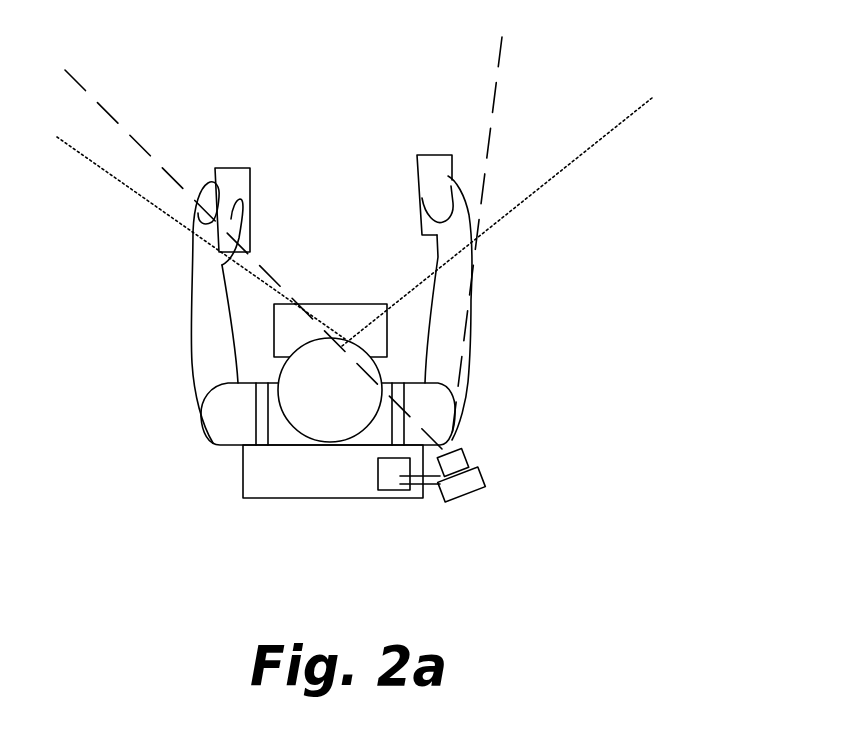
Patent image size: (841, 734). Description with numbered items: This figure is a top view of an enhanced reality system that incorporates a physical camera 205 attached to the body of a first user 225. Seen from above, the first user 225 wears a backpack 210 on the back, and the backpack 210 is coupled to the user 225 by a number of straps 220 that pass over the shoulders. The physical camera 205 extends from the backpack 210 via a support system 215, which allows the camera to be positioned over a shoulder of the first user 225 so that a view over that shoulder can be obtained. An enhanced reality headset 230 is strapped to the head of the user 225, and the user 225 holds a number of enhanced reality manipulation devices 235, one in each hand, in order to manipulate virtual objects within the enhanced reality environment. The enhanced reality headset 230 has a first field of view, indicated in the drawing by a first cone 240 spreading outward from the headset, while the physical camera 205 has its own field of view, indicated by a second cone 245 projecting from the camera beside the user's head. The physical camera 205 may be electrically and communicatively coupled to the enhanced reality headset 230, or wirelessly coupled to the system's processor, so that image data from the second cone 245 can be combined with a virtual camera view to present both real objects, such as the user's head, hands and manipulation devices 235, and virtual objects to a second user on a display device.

The physical camera 205 is at (468, 523).
The backpack 210 is at (272, 522).
The support system 215 is at (429, 518).
The straps 220 is at (262, 426).
The first user 225 is at (213, 323).
The enhanced reality headset 230 is at (345, 288).
The enhanced reality manipulation devices 235 is at (231, 141).
The first cone 240 is at (353, 208).
The second cone 245 is at (286, 226).